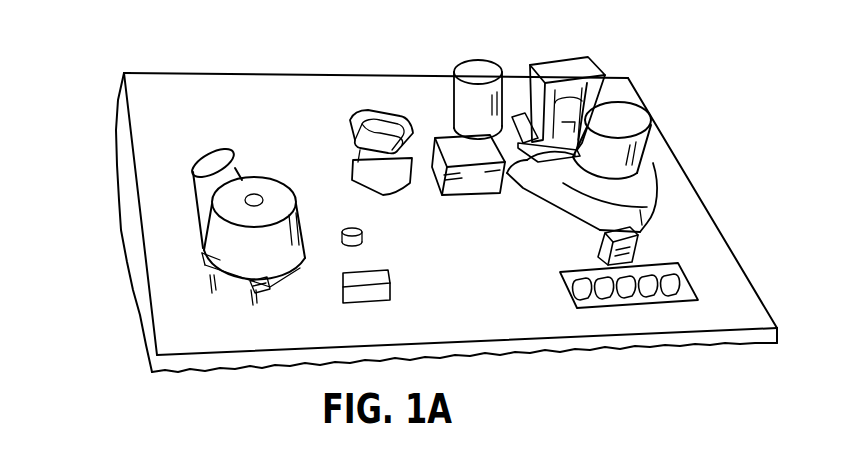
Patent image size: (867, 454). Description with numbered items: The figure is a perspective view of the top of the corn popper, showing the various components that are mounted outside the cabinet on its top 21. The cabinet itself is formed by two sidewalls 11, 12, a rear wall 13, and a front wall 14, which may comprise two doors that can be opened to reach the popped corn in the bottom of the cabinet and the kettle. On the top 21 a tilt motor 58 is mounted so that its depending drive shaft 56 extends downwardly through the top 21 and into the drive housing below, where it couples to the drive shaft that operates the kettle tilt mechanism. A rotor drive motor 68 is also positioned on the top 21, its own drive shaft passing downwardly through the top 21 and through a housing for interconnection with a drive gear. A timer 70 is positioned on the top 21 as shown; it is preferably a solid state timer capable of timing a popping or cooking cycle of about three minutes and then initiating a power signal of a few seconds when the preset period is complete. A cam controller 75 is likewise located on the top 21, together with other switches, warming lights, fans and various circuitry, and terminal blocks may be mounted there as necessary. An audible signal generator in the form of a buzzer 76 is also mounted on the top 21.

The sidewall 11 is at (733, 230).
The sidewall 12 is at (122, 146).
The rear wall 13 is at (318, 74).
The front wall 14 is at (530, 355).
The top 21 is at (258, 116).
The depending drive shaft 56 is at (262, 293).
The tilt motor 58 is at (276, 202).
The rotor drive motor 68 is at (365, 140).
The timer 70 is at (392, 289).
The cam controller 75 is at (441, 201).
The buzzer 76 is at (345, 236).